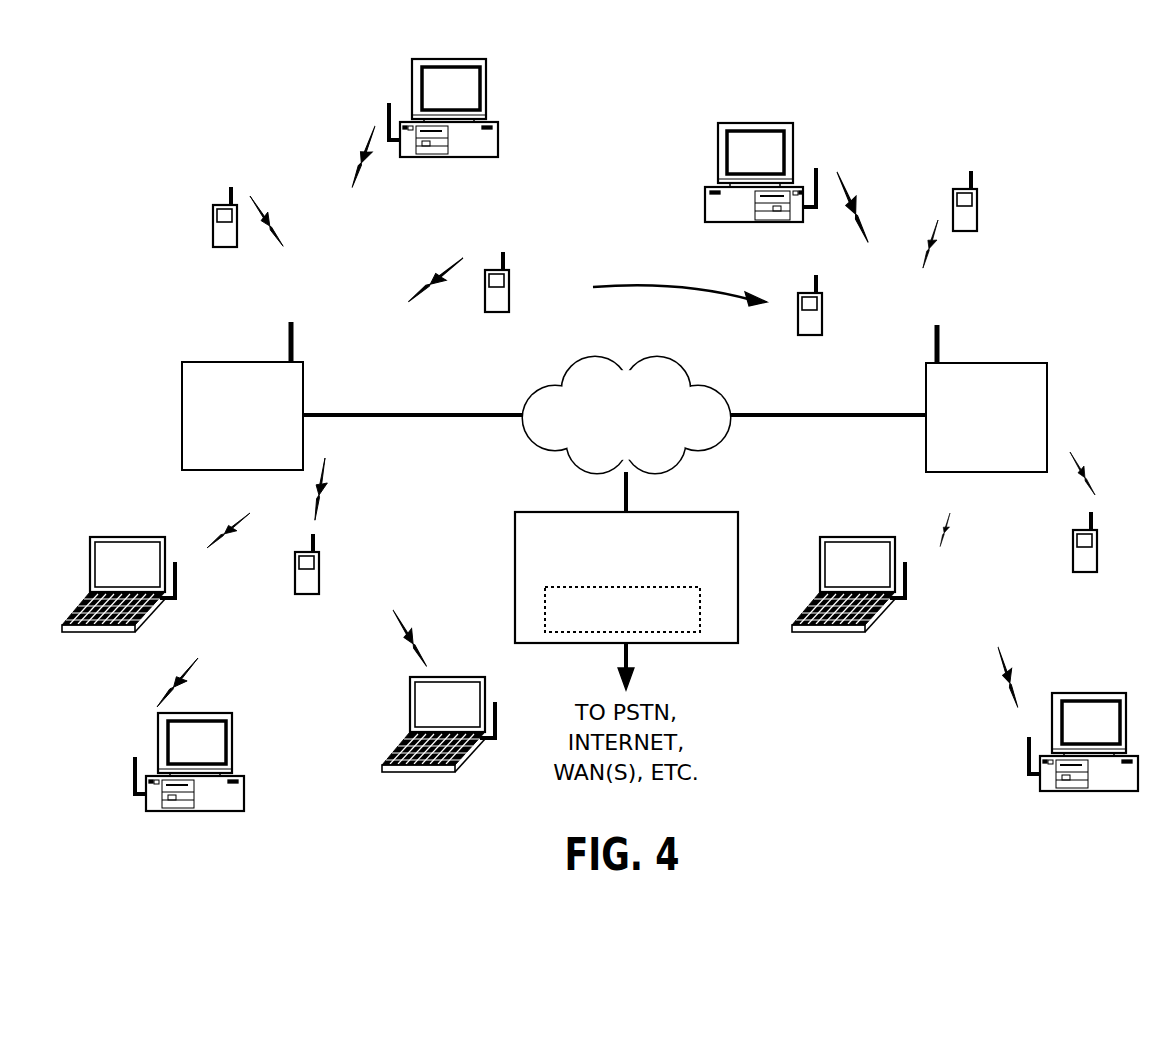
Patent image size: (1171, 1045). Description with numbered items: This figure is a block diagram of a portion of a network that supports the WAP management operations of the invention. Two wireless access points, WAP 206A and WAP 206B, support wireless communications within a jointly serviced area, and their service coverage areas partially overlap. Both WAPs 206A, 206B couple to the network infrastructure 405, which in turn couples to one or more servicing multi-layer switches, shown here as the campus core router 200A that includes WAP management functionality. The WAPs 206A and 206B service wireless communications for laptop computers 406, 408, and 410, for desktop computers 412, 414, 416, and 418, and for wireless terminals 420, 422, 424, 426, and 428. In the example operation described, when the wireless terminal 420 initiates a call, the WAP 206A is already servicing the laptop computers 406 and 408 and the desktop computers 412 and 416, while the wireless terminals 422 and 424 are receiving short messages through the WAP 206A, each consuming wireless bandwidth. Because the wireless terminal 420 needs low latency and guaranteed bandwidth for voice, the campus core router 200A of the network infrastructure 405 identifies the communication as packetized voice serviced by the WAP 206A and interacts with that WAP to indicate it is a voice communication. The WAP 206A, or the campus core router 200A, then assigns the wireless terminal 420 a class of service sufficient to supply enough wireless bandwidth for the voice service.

The network infrastructure 405 is at (688, 375).
The campus core router 200A is at (556, 512).
The WAP 206A is at (254, 362).
The WAP 206B is at (1018, 363).
The laptop computer 406 is at (136, 537).
The laptop computer 408 is at (457, 677).
The laptop computer 410 is at (866, 537).
The desktop computer 412 is at (205, 713).
The desktop computer 414 is at (1080, 693).
The desktop computer 416 is at (457, 59).
The desktop computer 418 is at (770, 123).
The wireless terminal 420 is at (318, 583).
The wireless terminal 422 is at (213, 237).
The wireless terminal 424 is at (508, 300).
The wireless terminal 426 is at (977, 220).
The wireless terminal 428 is at (1097, 560).